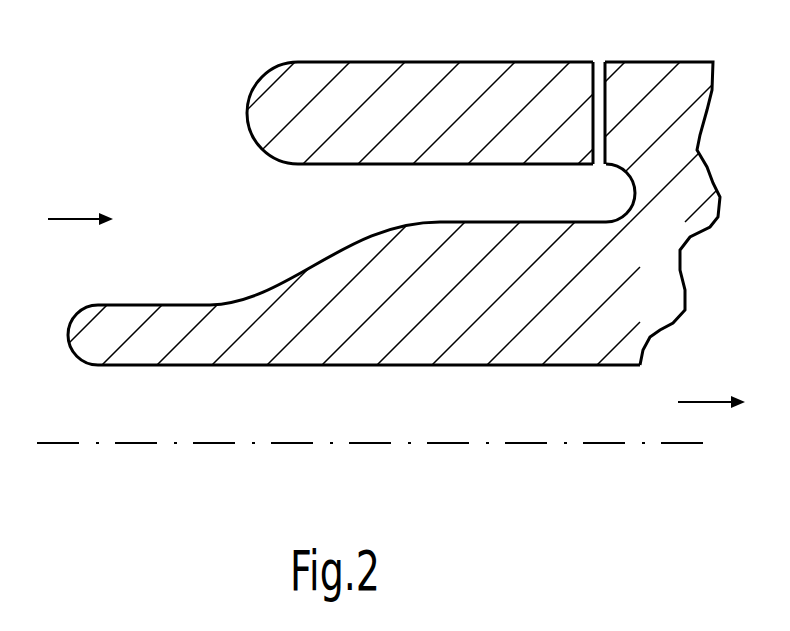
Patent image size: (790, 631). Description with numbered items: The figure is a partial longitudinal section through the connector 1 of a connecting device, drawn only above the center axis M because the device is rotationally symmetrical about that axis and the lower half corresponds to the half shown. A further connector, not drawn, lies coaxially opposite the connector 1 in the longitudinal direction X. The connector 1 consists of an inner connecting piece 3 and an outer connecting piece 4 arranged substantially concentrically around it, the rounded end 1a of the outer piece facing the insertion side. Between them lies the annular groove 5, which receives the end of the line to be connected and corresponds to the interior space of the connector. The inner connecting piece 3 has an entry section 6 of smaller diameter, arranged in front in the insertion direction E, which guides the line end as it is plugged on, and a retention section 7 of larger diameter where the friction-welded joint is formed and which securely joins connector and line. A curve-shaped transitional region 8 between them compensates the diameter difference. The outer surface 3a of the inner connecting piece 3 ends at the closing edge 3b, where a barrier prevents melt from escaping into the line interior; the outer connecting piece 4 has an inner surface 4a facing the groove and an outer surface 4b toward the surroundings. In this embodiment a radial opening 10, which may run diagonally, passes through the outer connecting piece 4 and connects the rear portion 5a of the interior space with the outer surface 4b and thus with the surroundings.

The connector 1 is at (393, 112).
The rounded end of sealing ring 1a is at (312, 166).
The inner connecting piece 3 is at (330, 300).
The outer surface of the inner connecting piece 3a is at (547, 222).
The closing edge of the inner connecting piece 3b is at (85, 308).
The outer connecting piece 4 is at (485, 107).
The inner surface of the outer connecting piece 4a is at (452, 166).
The outer surface of the connector 4b is at (425, 63).
The annular groove 5 is at (512, 183).
The rear portion of the interior space 5a is at (610, 197).
The entry section 6 is at (167, 328).
The retention section 7 is at (515, 317).
The transitional region 8 is at (287, 285).
The radial opening 10 is at (607, 93).
The center axis M is at (60, 443).
The insertion direction E is at (80, 207).
The longitudinal direction X is at (711, 389).